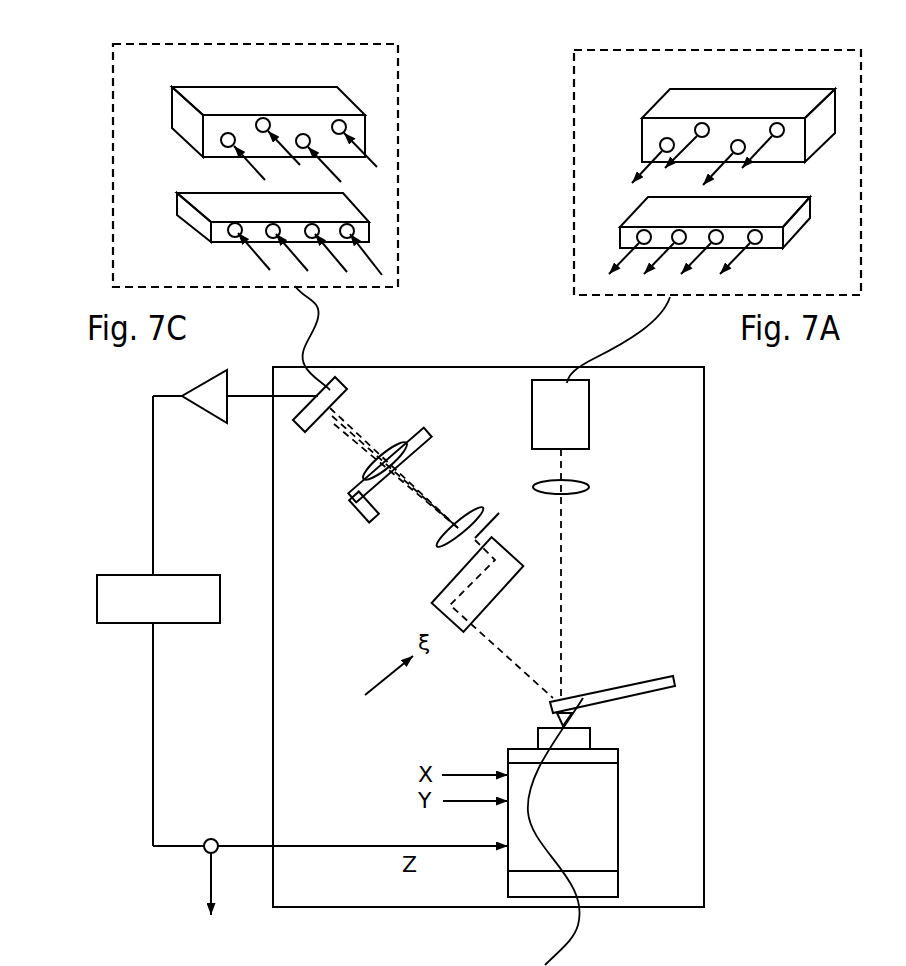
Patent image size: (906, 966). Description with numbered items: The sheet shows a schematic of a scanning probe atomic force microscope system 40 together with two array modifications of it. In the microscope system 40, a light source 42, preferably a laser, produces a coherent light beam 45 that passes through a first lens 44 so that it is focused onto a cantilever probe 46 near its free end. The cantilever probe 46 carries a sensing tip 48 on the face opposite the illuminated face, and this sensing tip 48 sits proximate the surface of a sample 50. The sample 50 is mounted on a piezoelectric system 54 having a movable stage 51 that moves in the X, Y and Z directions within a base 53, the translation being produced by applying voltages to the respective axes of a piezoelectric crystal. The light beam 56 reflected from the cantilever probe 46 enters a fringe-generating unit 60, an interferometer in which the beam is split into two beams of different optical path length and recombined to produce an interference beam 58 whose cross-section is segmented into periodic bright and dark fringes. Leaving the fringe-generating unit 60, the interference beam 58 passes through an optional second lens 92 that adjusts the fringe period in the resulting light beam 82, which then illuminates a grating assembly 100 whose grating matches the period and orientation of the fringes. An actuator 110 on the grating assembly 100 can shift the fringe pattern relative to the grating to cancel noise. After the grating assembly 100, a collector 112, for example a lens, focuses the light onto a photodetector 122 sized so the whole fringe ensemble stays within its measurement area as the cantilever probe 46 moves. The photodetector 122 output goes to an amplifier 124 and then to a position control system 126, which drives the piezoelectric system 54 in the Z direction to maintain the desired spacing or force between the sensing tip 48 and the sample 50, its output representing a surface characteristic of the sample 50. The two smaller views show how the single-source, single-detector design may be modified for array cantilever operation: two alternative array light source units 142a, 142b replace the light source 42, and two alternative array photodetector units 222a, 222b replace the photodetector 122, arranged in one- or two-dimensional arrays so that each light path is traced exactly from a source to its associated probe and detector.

In FIG. 2, the atomic force microscope system 40 is at (692, 560).
In FIG. 2, the light source 42 is at (562, 411).
In FIG. 2, the first lens 44 is at (578, 487).
In FIG. 2, the light beam 45 is at (562, 584).
In FIG. 2, the cantilever probe 46 is at (627, 690).
In FIG. 2, the sensing tip 48 is at (580, 716).
In FIG. 2, the sample 50 is at (552, 737).
In FIG. 2, the movable stage 51 is at (600, 757).
In FIG. 2, the base 53 is at (605, 885).
In FIG. 2, the piezoelectric system 54 is at (600, 810).
In FIG. 2, the light beam 56 is at (508, 651).
In FIG. 2, the interference beam 58 is at (503, 520).
In FIG. 2, the fringe-generating unit 60 is at (430, 603).
In FIG. 2, the light beam 82 is at (421, 498).
In FIG. 2, the second lens 92 is at (472, 513).
In FIG. 2, the grating assembly 100 is at (422, 443).
In FIG. 2, the actuator 110 is at (361, 512).
In FIG. 2, the collector 112 is at (370, 475).
In FIG. 2, the photodetector 122 is at (336, 388).
In FIG. 2, the amplifier 124 is at (211, 402).
In FIG. 2, the position control system 126 is at (122, 595).
In FIG. 7A, the array light source unit 142a is at (781, 102).
In FIG. 7A, the array light source unit 142b is at (795, 218).
In FIG. 7C, the array photodetector unit 222a is at (330, 102).
In FIG. 7C, the array photodetector unit 222b is at (332, 203).